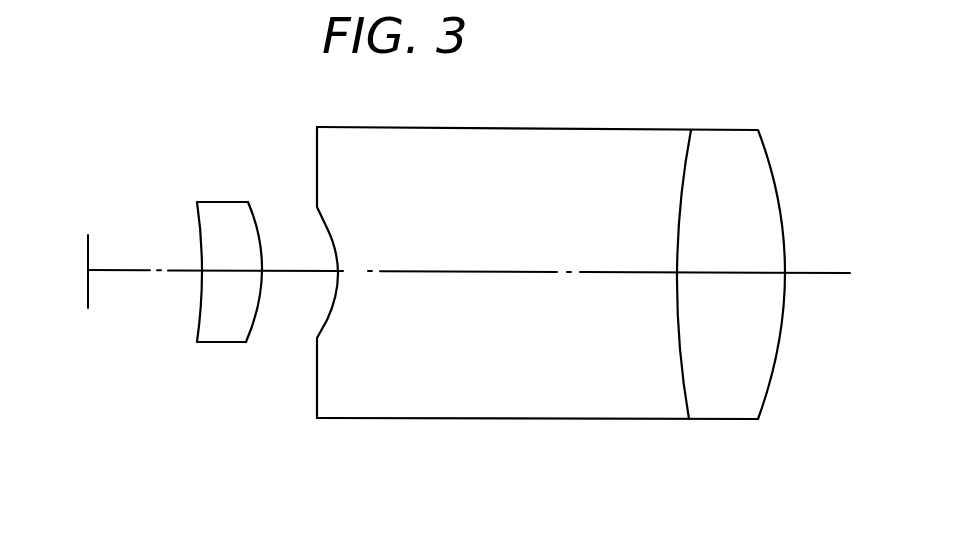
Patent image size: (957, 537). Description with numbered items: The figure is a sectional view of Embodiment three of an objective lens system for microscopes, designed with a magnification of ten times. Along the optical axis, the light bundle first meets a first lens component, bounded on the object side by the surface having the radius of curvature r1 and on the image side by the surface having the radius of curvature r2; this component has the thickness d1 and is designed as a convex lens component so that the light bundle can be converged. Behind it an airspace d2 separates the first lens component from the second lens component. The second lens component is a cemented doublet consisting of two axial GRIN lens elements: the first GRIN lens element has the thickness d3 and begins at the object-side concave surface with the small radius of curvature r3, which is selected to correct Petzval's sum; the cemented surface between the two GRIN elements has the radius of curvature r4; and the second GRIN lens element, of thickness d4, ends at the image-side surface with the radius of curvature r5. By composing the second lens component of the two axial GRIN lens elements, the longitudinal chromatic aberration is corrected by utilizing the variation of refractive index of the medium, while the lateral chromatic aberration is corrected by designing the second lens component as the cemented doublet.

The radius of curvature of first lens surface r1 is at (197, 220).
The radius of curvature of second lens surface r2 is at (256, 217).
The radius of curvature of third lens surface r3 is at (322, 229).
The radius of curvature of fourth lens surface r4 is at (680, 184).
The radius of curvature of fifth lens surface r5 is at (773, 168).
The thickness of first lens element d1 is at (225, 272).
The airspace between first and second lens components d2 is at (290, 273).
The thickness of first GRIN lens element d3 is at (500, 275).
The thickness of second GRIN lens element d4 is at (730, 277).